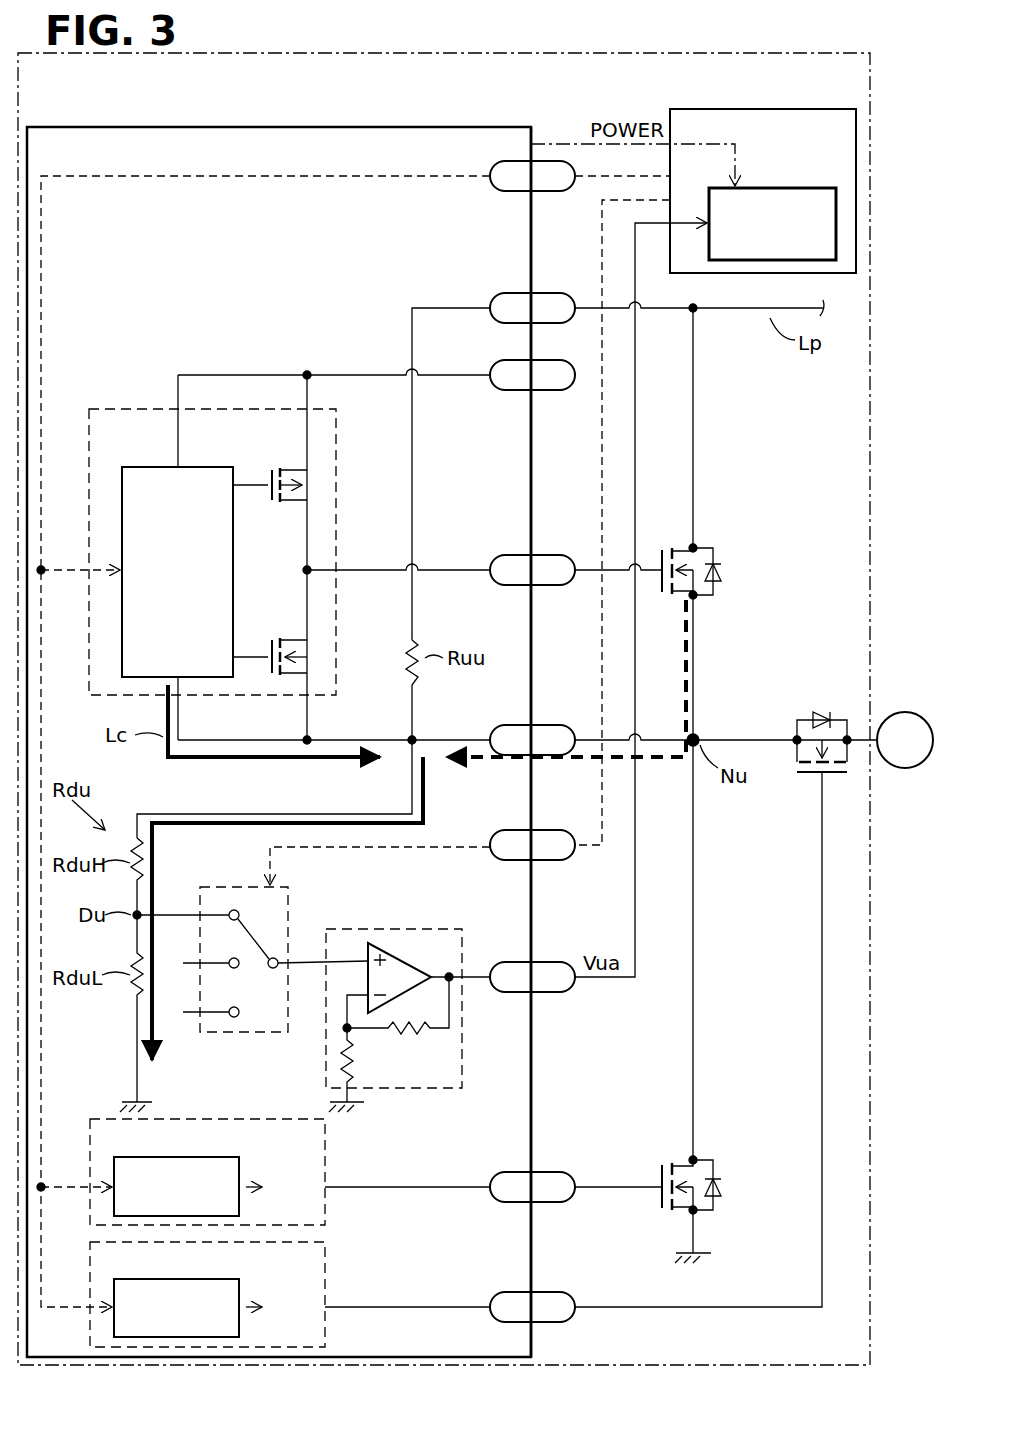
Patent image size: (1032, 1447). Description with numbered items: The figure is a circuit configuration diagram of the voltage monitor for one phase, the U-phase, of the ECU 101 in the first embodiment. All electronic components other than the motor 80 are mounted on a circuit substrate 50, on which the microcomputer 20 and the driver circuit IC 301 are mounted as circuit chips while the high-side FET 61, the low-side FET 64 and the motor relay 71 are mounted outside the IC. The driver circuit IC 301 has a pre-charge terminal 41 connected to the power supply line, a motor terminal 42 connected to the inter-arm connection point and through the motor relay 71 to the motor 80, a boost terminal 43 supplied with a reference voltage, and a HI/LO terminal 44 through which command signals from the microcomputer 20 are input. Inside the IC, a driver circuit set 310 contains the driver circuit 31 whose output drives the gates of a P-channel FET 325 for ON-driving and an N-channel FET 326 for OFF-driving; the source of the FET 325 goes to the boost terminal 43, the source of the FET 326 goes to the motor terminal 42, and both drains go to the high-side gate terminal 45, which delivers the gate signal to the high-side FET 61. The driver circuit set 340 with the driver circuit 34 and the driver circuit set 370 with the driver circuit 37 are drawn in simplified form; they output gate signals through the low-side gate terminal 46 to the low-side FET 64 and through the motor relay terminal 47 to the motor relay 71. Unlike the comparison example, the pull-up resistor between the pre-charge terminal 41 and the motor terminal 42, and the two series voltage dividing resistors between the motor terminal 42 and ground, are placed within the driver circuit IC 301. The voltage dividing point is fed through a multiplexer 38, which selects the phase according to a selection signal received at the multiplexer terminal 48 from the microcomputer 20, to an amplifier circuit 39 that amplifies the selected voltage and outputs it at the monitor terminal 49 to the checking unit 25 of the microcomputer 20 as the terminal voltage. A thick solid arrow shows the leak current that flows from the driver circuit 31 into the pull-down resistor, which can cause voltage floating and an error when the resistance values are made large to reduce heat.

The circuit substrate 50 is at (870, 1340).
The driver circuit IC 301 is at (276, 127).
The ECU 101 is at (553, 128).
The microcomputer 20 is at (772, 109).
The checking unit 25 is at (815, 188).
The HI/LO terminal 44 is at (548, 192).
The pre-charge terminal 41 is at (550, 292).
The boost terminal 43 is at (548, 391).
The high-side gate terminal 45 is at (550, 554).
The motor terminal 42 is at (550, 724).
The multiplexer terminal 48 is at (550, 829).
The monitor terminal 49 is at (550, 961).
The low-side gate terminal 46 is at (550, 1171).
The motor relay terminal 47 is at (550, 1291).
The driver circuit set 310 is at (128, 409).
The driver circuit 31 is at (158, 467).
The P-channel FET 325 is at (290, 468).
The N-channel FET 326 is at (290, 638).
The multiplexer 38 is at (228, 887).
The amplifier circuit 39 is at (392, 929).
The driver circuit set 340 is at (328, 1148).
The driver circuit 34 is at (180, 1157).
The driver circuit set 370 is at (328, 1270).
The driver circuit 37 is at (180, 1279).
The high-side FET 61 is at (686, 548).
The low-side FET 64 is at (682, 1162).
The motor relay 71 is at (812, 778).
The motor 80 is at (906, 712).